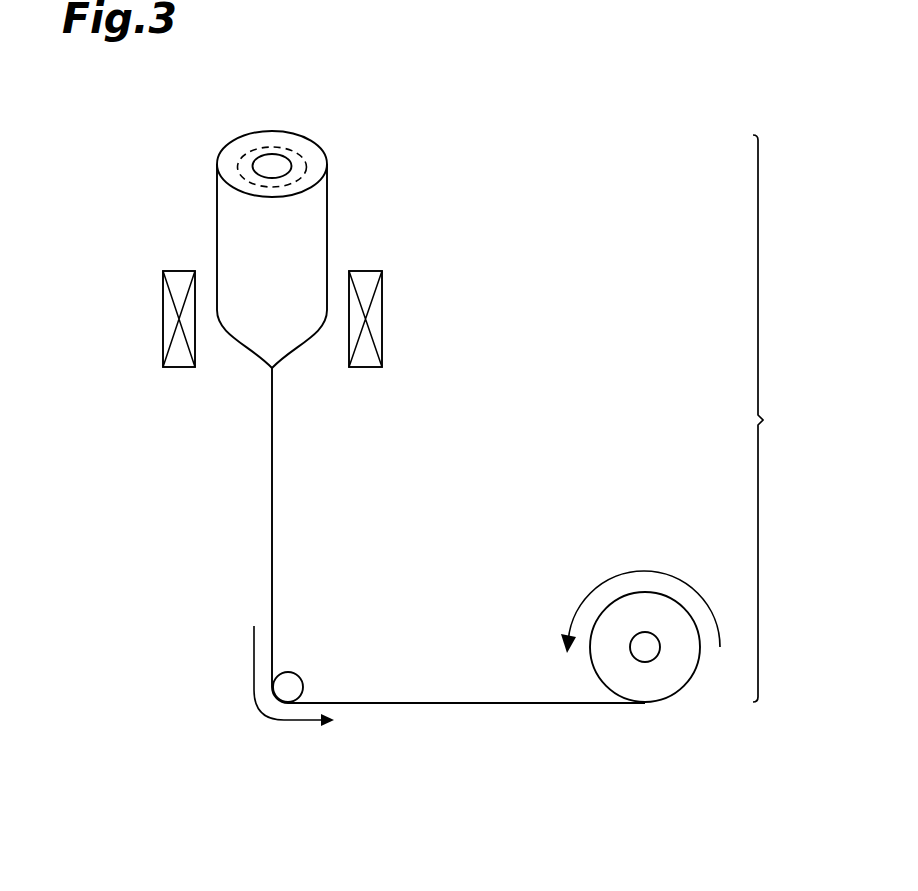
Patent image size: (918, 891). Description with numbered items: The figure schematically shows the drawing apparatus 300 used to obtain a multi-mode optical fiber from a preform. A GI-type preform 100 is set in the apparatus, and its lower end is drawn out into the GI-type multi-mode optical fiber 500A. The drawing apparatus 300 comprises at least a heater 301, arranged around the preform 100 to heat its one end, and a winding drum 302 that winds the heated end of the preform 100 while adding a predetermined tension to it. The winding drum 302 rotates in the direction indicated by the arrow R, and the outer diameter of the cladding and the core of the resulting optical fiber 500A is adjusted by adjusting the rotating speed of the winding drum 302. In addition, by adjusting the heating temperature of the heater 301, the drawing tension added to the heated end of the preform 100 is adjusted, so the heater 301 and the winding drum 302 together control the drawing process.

The GI-type preform 100 is at (328, 195).
The heater 301 is at (163, 318).
The GI-type multi-mode optical fiber 500A is at (296, 551).
The winding drum 302 is at (675, 673).
The arrow R is at (668, 574).
The drawing apparatus 300 is at (785, 418).